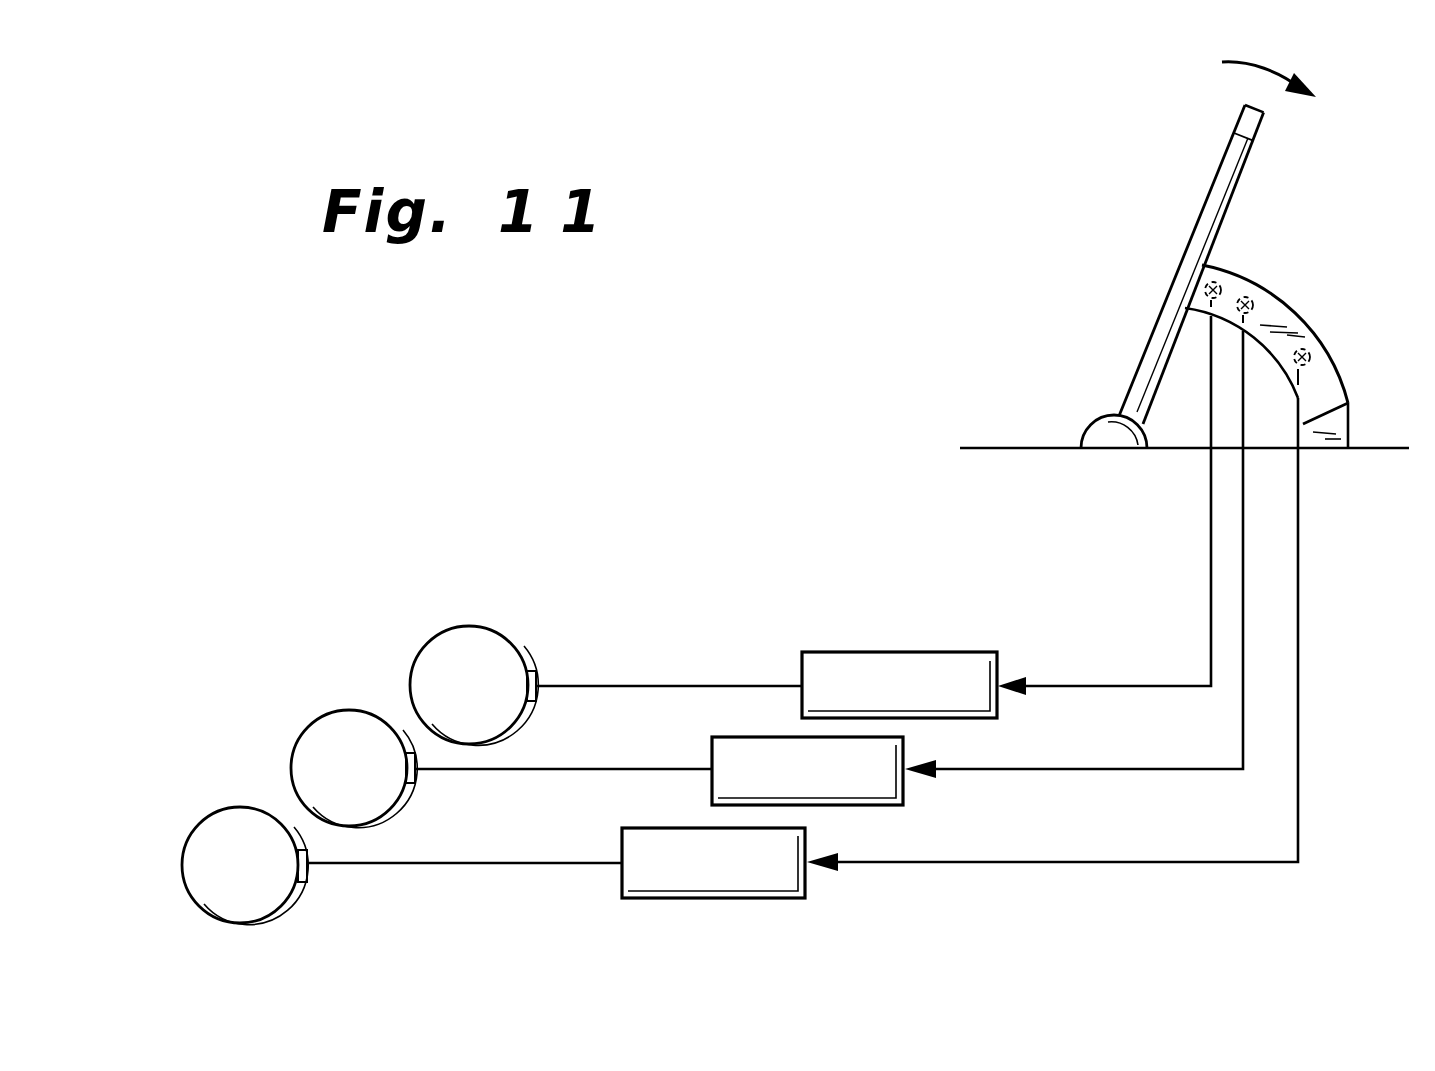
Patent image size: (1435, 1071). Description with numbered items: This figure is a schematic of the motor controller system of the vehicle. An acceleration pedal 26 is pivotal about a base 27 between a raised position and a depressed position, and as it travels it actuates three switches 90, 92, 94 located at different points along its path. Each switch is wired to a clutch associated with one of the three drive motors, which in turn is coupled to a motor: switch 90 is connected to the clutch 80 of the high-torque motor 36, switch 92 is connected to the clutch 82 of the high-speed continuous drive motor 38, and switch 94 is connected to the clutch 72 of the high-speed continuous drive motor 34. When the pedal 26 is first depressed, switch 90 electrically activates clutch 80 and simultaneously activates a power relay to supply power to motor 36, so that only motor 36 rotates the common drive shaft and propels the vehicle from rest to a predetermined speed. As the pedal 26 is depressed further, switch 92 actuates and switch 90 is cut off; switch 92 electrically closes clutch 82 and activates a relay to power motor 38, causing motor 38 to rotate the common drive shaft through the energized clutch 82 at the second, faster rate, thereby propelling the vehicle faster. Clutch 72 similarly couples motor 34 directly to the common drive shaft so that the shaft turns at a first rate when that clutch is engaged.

The acceleration pedal 26 is at (1156, 337).
The base 27 is at (1089, 436).
The high-speed continuous drive motor 34 is at (222, 807).
The high-torque motor 36 is at (442, 632).
The high-speed continuous drive motor 38 is at (323, 713).
The clutch 72 is at (622, 858).
The clutch 80 is at (801, 669).
The clutch 82 is at (712, 762).
The switch 90 is at (1228, 282).
The switch 92 is at (1263, 297).
The switch 94 is at (1337, 343).